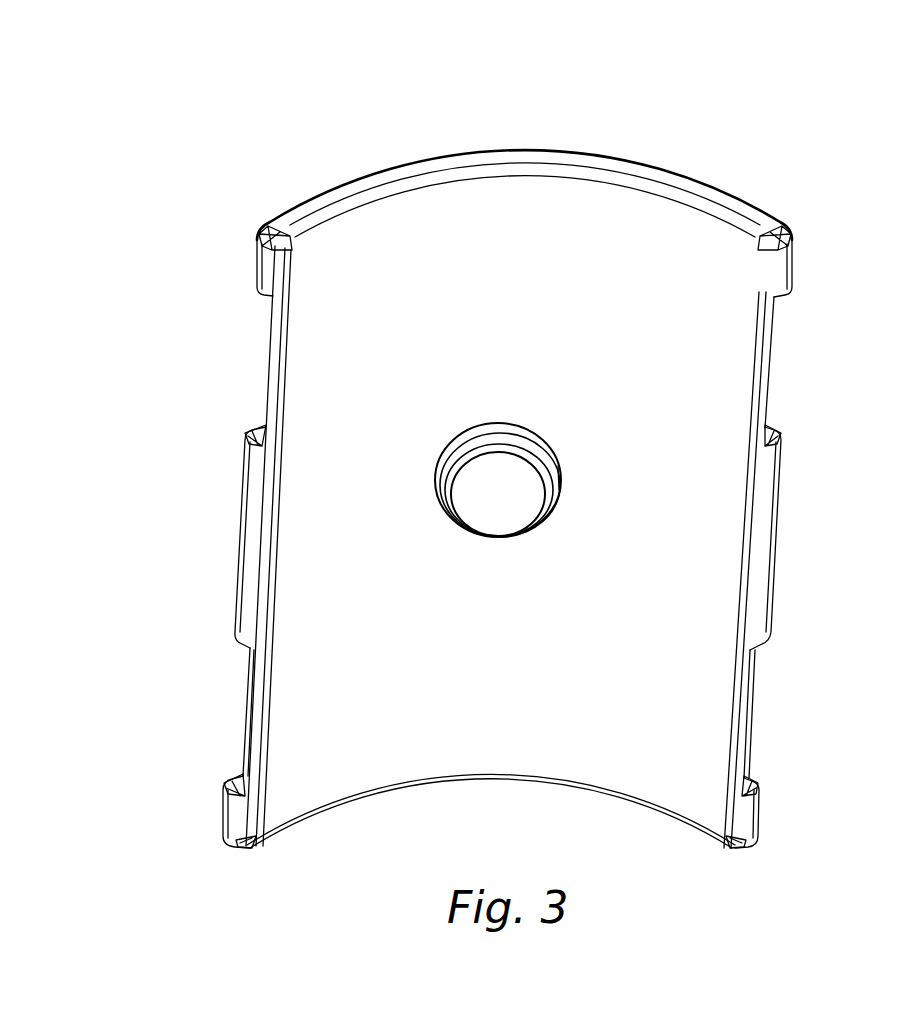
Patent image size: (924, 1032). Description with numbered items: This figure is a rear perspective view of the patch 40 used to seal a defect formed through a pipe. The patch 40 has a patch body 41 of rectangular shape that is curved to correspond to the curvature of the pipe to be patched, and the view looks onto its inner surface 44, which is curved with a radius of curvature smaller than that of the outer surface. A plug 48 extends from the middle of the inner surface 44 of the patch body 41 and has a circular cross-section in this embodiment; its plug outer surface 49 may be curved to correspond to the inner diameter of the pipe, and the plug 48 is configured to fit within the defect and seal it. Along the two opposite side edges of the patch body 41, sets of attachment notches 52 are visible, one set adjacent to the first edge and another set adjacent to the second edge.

The patch 40 is at (265, 153).
The patch body 41 is at (403, 157).
The inner surface 44 is at (642, 262).
The plug 48 is at (486, 436).
The plug outer surface 49 is at (500, 499).
The attachment notches 52 is at (252, 348).